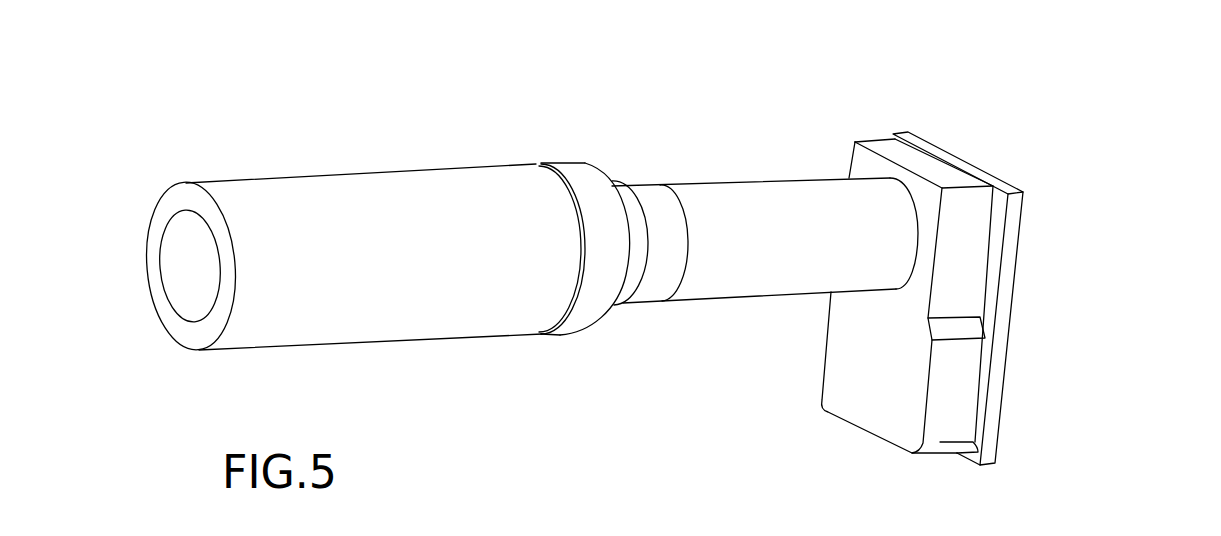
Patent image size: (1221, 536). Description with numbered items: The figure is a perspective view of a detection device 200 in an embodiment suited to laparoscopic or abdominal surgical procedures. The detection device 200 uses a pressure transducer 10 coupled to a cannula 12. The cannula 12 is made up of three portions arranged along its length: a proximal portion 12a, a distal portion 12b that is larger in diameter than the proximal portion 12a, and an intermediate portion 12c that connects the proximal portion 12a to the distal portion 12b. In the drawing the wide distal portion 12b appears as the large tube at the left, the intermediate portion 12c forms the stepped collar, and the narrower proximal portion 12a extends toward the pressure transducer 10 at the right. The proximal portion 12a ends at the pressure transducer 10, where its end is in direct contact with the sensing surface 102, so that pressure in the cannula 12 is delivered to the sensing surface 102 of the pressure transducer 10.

The detection device 200 is at (1135, 155).
The cannula 12 is at (187, 118).
The proximal portion 12a is at (750, 195).
The distal portion 12b is at (385, 210).
The intermediate portion 12c is at (609, 182).
The pressure transducer 10 is at (1025, 312).
The sensing surface 102 is at (878, 374).